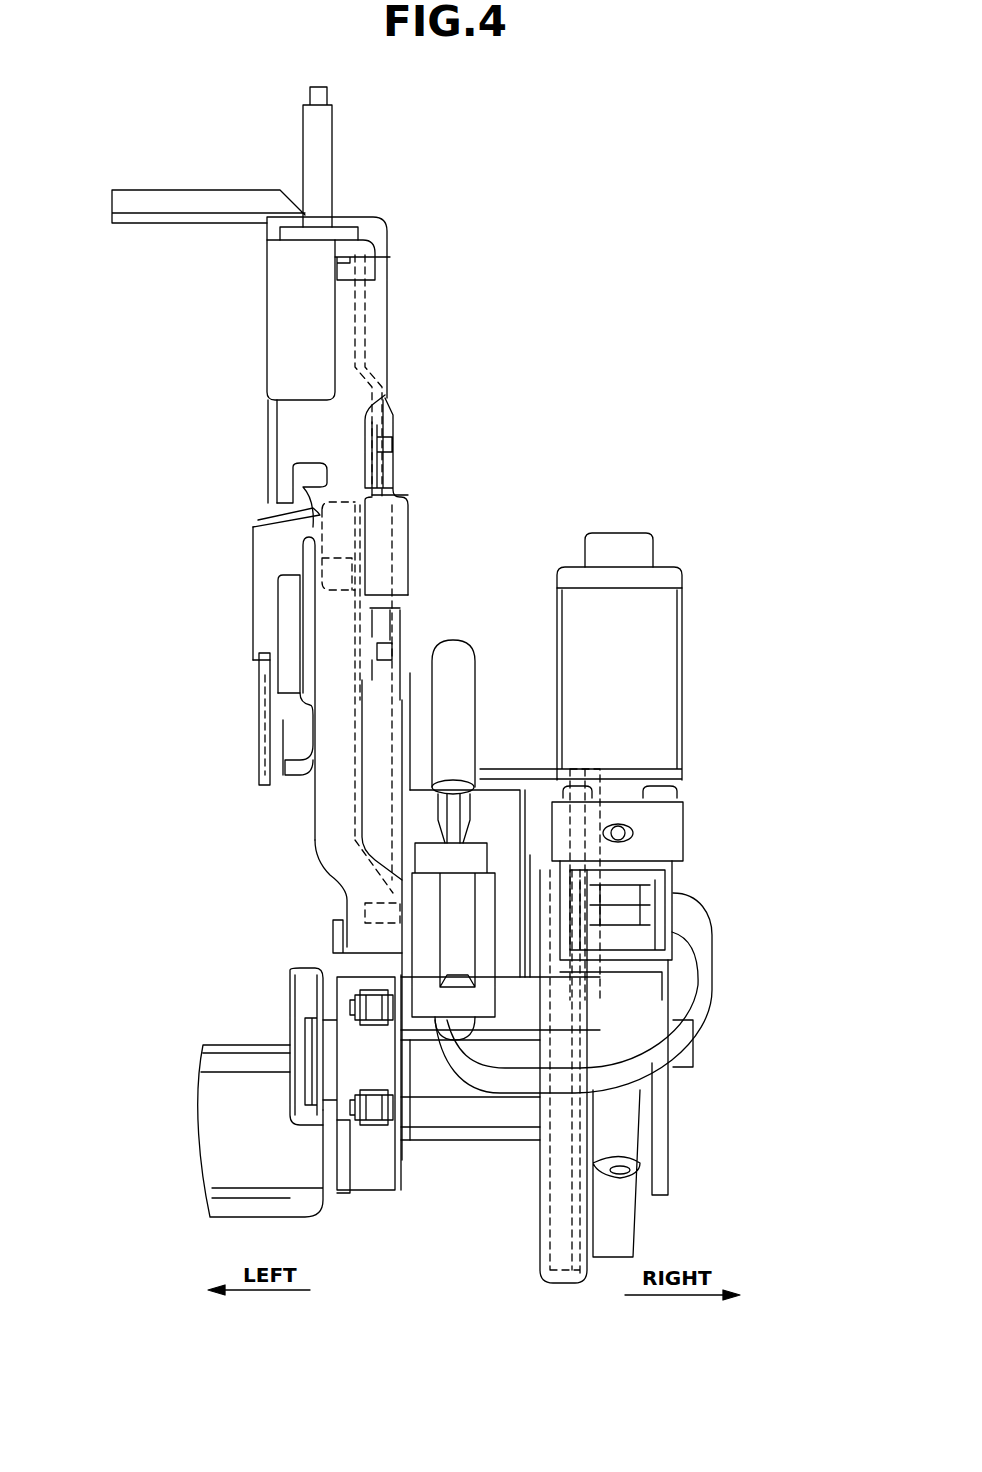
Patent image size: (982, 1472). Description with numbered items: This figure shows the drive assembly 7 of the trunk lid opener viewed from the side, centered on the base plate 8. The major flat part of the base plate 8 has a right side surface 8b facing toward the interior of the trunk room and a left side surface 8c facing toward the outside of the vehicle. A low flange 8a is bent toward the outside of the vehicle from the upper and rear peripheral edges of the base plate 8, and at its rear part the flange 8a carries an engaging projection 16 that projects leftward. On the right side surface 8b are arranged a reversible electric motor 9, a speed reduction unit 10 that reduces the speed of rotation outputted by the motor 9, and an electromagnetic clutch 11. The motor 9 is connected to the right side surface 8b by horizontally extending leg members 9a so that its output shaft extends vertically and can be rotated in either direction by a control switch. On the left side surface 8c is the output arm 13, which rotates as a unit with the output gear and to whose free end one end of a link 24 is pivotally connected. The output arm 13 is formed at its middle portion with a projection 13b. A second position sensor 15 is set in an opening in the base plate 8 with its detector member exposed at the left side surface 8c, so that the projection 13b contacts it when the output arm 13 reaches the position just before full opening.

The seat slide drive unit 7 is at (492, 424).
The base plate 8 is at (367, 212).
The low flange 8a is at (298, 440).
The right side surface 8b is at (388, 330).
The left side surface 8c is at (348, 793).
The reversible electric motor 9 is at (667, 688).
The leg members 9a is at (420, 1037).
The speed reduction unit 10 is at (705, 1046).
The electromagnetic clutch 11 is at (500, 790).
The output arm 13 is at (297, 612).
The projection 13b is at (305, 713).
The second position sensor 15 is at (290, 517).
The engaging projection 16 is at (313, 490).
The link 24 is at (258, 693).